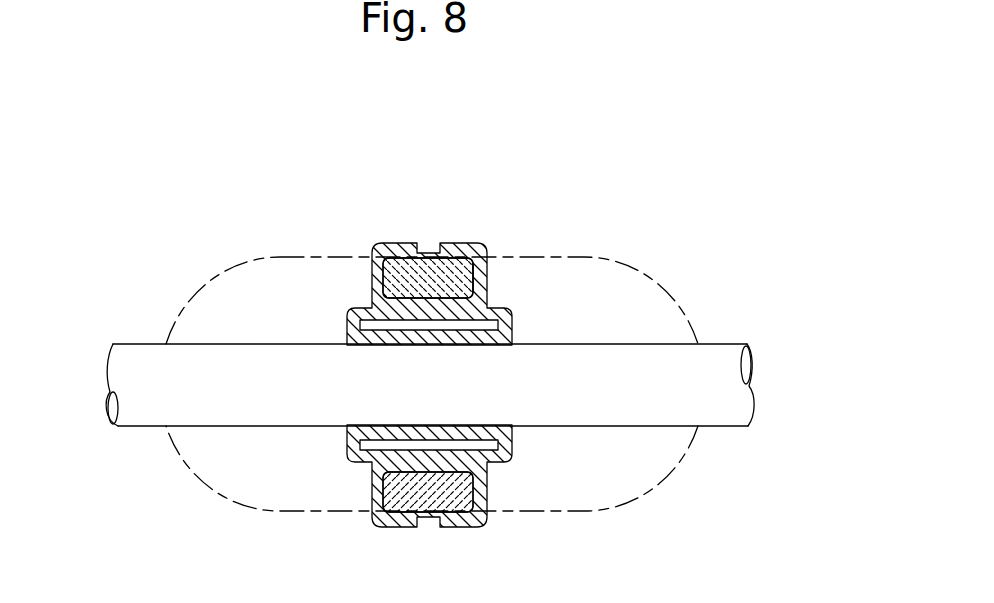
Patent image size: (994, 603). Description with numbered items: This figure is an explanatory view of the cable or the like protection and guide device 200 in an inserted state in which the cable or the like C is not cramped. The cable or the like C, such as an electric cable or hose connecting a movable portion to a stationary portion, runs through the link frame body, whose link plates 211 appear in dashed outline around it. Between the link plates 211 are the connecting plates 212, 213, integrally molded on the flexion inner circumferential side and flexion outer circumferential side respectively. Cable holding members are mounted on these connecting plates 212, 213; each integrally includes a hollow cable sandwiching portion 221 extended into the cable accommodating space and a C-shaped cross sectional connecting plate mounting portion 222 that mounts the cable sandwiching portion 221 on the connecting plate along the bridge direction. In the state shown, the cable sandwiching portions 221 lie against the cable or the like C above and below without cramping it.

The cable or the like C is at (145, 343).
The cable or the like protection and guide device 200 is at (613, 232).
The link plate 211 is at (255, 257).
The connecting plate 212 is at (407, 497).
The connecting plate 213 is at (467, 277).
The cable sandwiching portion 221 is at (347, 328).
The connecting plate mounting portion 222 is at (458, 243).